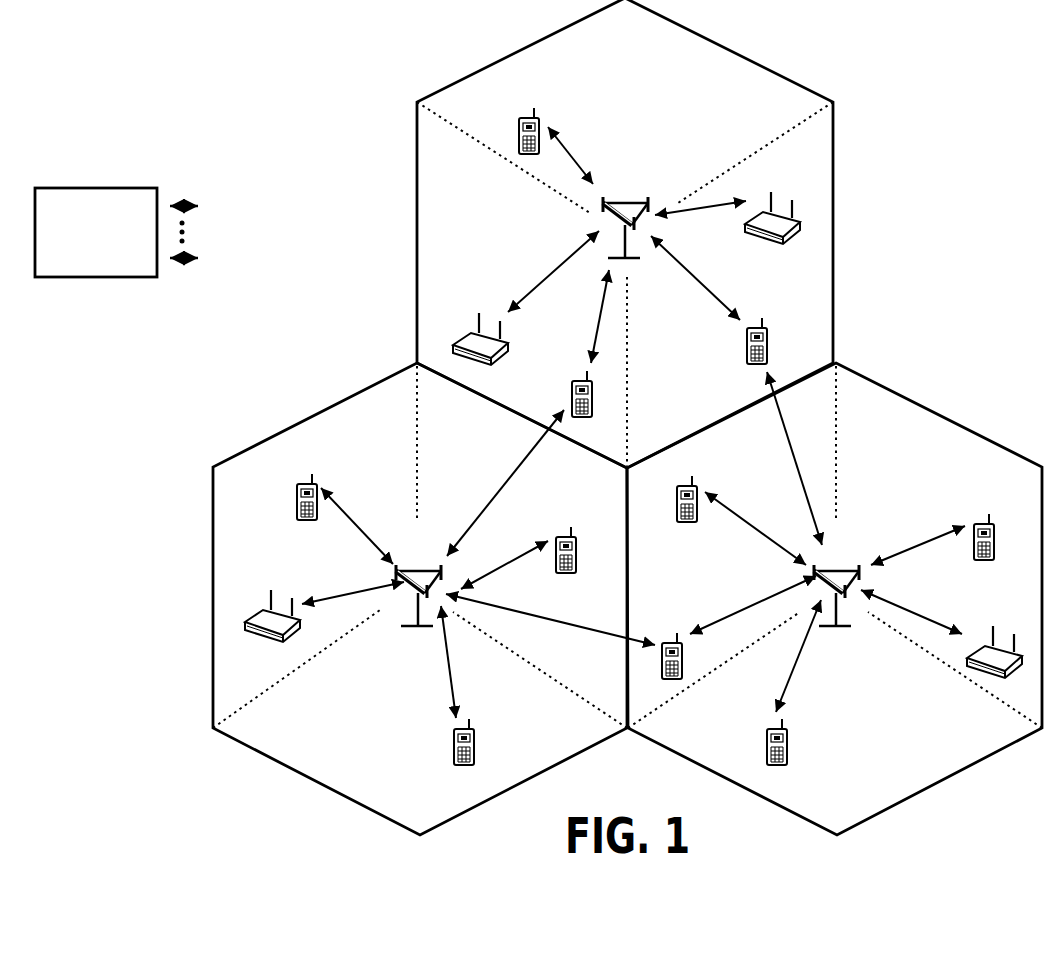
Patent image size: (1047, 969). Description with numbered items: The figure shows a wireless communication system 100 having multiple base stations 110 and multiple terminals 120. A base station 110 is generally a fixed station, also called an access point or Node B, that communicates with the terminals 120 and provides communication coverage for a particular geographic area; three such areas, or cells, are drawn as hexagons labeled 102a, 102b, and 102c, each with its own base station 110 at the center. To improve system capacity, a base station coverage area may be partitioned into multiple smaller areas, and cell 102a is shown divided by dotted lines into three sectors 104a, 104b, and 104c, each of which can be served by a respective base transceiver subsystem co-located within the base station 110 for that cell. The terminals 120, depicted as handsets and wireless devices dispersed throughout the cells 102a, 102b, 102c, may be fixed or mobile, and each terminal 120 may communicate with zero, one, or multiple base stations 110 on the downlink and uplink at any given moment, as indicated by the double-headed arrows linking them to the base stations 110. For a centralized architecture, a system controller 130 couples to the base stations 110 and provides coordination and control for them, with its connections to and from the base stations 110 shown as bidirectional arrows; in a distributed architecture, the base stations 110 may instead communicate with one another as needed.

The wireless communication system 100 is at (975, 62).
The cell 102a is at (729, 50).
The cell 102b is at (316, 414).
The cell 102c is at (958, 402).
The sector 104a is at (625, 122).
The sector 104b is at (522, 348).
The sector 104c is at (627, 547).
The base station 110 is at (631, 193).
The terminal 120 is at (518, 125).
The system controller 130 is at (94, 187).